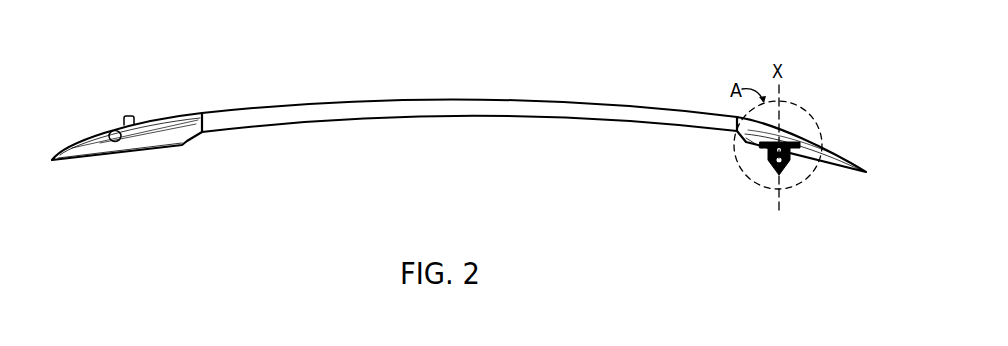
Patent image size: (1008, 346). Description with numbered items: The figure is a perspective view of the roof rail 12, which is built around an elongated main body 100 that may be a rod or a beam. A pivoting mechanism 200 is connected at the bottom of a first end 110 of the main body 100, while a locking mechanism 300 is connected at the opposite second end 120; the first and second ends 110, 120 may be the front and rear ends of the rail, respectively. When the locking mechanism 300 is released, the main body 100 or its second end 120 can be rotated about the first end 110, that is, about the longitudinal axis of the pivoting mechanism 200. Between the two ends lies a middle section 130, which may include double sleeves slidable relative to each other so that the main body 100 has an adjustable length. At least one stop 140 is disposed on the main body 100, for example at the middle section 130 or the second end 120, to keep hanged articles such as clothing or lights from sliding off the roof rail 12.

The roof rail 12 is at (593, 100).
The main body 100 is at (449, 101).
The first end 110 is at (817, 142).
The second end 120 is at (102, 134).
The middle section 130 is at (417, 118).
The stop 140 is at (126, 116).
The pivoting mechanism 200 is at (786, 175).
The locking mechanism 300 is at (111, 142).